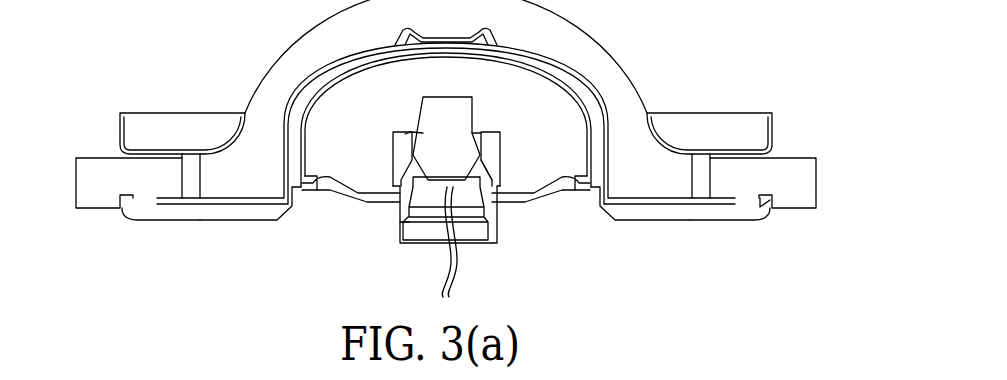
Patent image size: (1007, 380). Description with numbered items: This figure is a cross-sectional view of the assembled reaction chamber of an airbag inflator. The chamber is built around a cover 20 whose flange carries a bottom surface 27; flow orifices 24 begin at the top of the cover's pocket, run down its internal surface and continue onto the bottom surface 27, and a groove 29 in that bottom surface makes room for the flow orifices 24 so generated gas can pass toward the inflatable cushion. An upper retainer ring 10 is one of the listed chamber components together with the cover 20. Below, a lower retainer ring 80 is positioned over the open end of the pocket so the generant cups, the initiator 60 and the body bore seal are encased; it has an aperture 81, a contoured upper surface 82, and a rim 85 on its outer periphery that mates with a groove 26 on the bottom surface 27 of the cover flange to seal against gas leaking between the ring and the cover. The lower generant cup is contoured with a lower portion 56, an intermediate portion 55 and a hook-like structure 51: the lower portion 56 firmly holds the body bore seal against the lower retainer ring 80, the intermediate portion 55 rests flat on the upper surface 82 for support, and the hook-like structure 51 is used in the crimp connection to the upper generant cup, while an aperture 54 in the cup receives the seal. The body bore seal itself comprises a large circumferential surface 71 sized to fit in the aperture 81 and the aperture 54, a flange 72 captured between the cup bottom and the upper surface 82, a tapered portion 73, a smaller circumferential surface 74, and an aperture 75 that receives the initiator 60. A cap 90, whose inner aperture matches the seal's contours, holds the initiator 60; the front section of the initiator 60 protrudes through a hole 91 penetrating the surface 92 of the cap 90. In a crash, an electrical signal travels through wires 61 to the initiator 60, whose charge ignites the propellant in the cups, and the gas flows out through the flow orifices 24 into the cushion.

The upper retainer ring 10 is at (773, 125).
The cover 20 is at (618, 65).
The flow orifices 24 is at (312, 72).
The groove 26 is at (770, 196).
The bottom surface 27 is at (97, 208).
The groove 29 is at (163, 221).
The hook-like structure 51 is at (298, 205).
The aperture 54 is at (347, 203).
The intermediate portion 55 is at (533, 198).
The lower portion 56 is at (383, 203).
The initiator 60 is at (467, 116).
The wires 61 is at (458, 284).
The large circumferential surface 71 is at (499, 236).
The flange 72 is at (518, 222).
The tapered portion 73 is at (485, 170).
The smaller circumferential surface 74 is at (410, 143).
The aperture 75 is at (423, 130).
The lower retainer ring 80 is at (712, 221).
The aperture 81 is at (396, 226).
The upper surface 82 is at (668, 210).
The rim 85 is at (767, 204).
The cap 90 is at (490, 142).
The hole 91 is at (478, 128).
The surface 92 is at (405, 134).